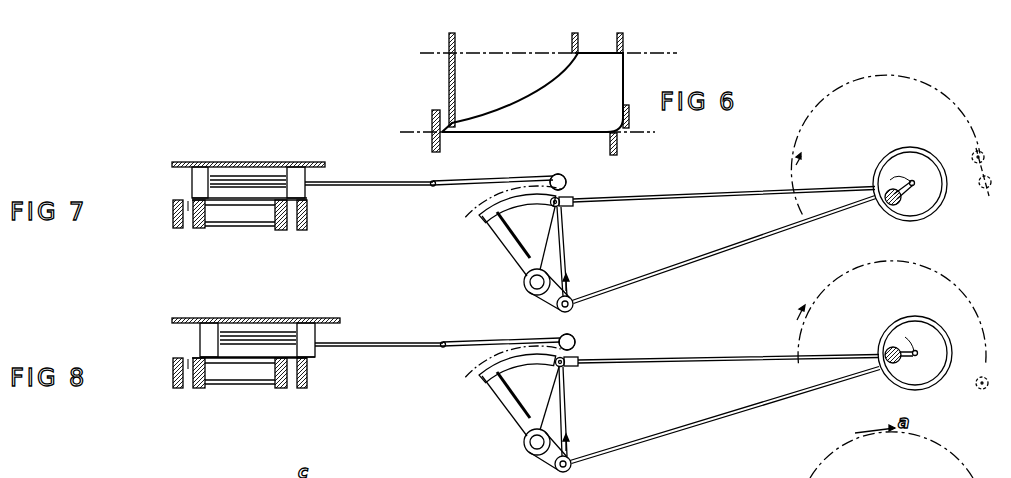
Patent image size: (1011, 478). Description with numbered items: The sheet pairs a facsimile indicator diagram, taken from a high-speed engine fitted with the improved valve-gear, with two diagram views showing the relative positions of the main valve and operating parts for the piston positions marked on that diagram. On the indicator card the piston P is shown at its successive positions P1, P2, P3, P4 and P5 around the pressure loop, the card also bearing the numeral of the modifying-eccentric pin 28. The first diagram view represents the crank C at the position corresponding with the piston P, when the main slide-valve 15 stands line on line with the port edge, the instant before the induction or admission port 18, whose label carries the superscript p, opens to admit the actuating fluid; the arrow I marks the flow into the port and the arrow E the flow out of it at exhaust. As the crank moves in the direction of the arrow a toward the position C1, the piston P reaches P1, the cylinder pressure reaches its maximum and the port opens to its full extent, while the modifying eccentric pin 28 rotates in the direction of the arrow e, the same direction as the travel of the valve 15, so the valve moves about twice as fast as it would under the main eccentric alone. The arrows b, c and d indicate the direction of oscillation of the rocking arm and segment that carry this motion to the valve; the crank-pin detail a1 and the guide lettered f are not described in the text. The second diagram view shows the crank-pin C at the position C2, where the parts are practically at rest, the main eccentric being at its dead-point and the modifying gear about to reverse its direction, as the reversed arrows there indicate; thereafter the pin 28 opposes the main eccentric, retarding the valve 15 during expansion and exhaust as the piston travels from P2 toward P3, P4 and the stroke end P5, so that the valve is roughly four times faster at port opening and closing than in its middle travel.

In FIG. 6, the piston P is at (630, 158).
In FIG. 6, the piston position P' P1 is at (655, 36).
In FIG. 6, the piston position P2 is at (606, 36).
In FIG. 6, the piston position P3 is at (462, 36).
In FIG. 6, the piston position P4 is at (466, 151).
In FIG. 6, the piston position P5 is at (436, 101).
In FIG. 6, the auxiliary or modifying eccentric pin 28 is at (532, 110).
In FIG. 7, the auxiliary or modifying eccentric pin 28 is at (555, 175).
In FIG. 8, the auxiliary or modifying eccentric pin 28 is at (577, 339).
In FIG. 7, the exhaust flow arrow E is at (190, 210).
In FIG. 8, the exhaust flow arrow E is at (190, 358).
In FIG. 7, the fixed guide frame f is at (235, 157).
In FIG. 8, the fixed guide frame f is at (262, 313).
In FIG. 7, the main slide-valve 15 is at (330, 172).
In FIG. 8, the main slide-valve 15 is at (340, 333).
In FIG. 7, the admission flow arrow I is at (262, 204).
In FIG. 8, the admission flow arrow I is at (262, 363).
In FIG. 7, the superscript of admission port 18p p is at (241, 225).
In FIG. 8, the superscript of admission port 18p p is at (241, 384).
In FIG. 7, the induction or admission port 18 is at (247, 209).
In FIG. 8, the induction or admission port 18 is at (251, 367).
In FIG. 7, the eccentric-pin rotation arrow e is at (566, 181).
In FIG. 8, the eccentric-pin rotation arrow e is at (559, 335).
In FIG. 7, the oscillation arrow d is at (500, 188).
In FIG. 8, the oscillation arrow d is at (500, 352).
In FIG. 7, the oscillation arrow c is at (548, 225).
In FIG. 8, the oscillation arrow c is at (555, 388).
In FIG. 7, the oscillation arrow b is at (540, 307).
In FIG. 8, the oscillation arrow b is at (538, 467).
In FIG. 7, the crank rotation arrow a is at (885, 148).
In FIG. 8, the crank rotation arrow a is at (891, 322).
In FIG. 7, the crank pin a1 is at (912, 188).
In FIG. 8, the crank pin a1 is at (914, 358).
In FIG. 7, the crank C is at (986, 156).
In FIG. 7, the crank position C' C1 is at (993, 172).
In FIG. 8, the crank position C2 is at (992, 391).